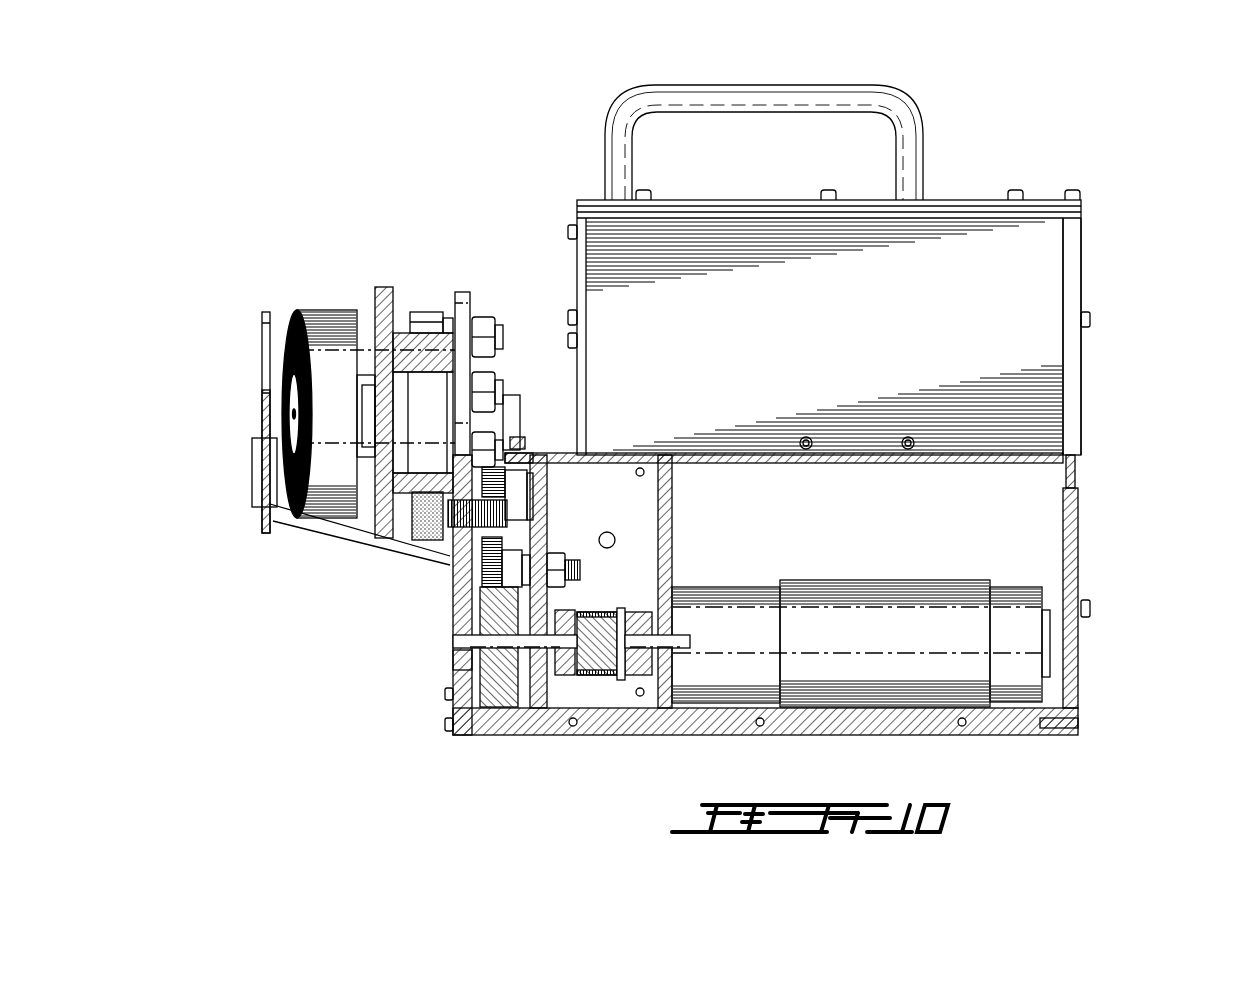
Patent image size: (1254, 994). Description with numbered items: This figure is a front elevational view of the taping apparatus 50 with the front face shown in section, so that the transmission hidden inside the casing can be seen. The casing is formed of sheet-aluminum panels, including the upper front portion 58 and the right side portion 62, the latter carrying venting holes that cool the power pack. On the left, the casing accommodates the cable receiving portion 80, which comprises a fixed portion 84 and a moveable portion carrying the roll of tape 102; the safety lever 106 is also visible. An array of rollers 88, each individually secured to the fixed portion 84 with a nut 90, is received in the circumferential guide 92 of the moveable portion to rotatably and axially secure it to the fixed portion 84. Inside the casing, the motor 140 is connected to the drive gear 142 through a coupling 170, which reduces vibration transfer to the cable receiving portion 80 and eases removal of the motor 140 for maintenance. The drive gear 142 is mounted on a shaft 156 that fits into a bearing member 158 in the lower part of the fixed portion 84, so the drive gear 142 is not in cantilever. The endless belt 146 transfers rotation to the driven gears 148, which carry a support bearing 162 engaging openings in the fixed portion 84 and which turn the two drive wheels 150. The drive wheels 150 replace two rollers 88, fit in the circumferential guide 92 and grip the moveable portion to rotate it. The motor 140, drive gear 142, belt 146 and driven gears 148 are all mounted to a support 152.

The taping apparatus 50 is at (1068, 108).
The upper front portion 58 is at (818, 337).
The right side portion 62 is at (1082, 404).
The cable receiving portion 80 is at (232, 148).
The fixed portion 84 is at (462, 733).
The rollers 88 is at (432, 322).
The nut 90 is at (482, 318).
The circumferential guide 92 is at (413, 313).
The roll of tape 102 is at (327, 322).
The safety lever 106 is at (257, 338).
The motor 140 is at (900, 623).
The drive gear 142 is at (513, 737).
The endless belt 146 is at (495, 705).
The driven gears 148 is at (480, 560).
The drive wheels 150 is at (430, 520).
The support 152 is at (558, 450).
The shaft 156 is at (453, 643).
The bearing member 158 is at (453, 658).
The support bearing 162 is at (497, 438).
The coupling 170 is at (603, 663).